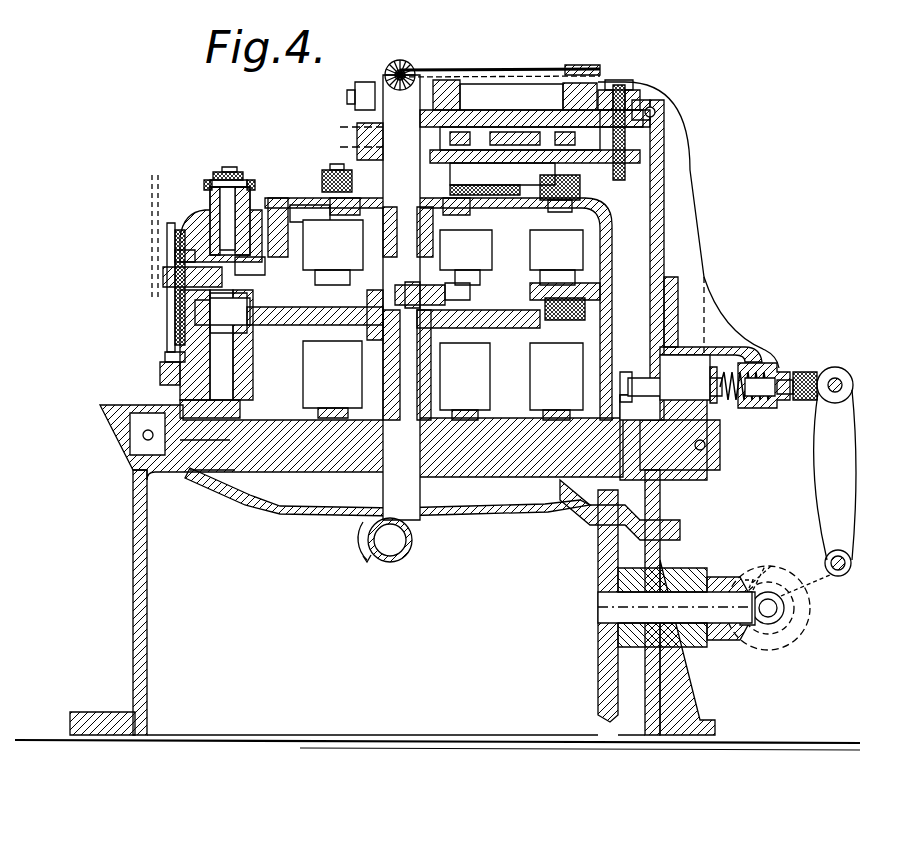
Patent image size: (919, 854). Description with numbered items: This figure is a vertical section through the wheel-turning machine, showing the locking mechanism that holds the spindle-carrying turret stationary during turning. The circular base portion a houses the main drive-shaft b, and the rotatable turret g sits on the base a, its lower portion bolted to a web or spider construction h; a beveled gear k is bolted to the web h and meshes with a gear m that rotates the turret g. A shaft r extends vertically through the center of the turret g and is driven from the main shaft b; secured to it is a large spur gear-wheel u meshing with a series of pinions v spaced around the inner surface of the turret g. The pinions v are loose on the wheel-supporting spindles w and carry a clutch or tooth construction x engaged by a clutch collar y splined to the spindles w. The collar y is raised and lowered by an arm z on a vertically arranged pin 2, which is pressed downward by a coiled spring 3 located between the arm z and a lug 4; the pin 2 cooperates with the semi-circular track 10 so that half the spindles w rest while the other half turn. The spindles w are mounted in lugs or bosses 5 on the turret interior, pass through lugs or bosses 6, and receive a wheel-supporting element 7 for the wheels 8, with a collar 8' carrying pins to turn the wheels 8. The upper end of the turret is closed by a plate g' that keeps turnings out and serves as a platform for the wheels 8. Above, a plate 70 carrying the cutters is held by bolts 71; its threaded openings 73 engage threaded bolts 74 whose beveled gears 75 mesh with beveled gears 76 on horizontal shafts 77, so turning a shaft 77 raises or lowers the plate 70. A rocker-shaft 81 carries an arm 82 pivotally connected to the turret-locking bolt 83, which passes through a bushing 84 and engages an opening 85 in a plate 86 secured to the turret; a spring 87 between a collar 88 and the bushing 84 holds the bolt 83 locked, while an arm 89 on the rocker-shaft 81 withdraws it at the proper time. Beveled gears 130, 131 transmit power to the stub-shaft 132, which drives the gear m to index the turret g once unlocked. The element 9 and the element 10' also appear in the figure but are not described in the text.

The circular base portion a is at (147, 600).
The main drive-shaft b is at (414, 545).
The rotatable turret g is at (494, 309).
The closing plate g' is at (429, 258).
The web or spider construction h is at (200, 468).
The beveled gear k is at (215, 498).
The gear m is at (595, 535).
The shaft r is at (410, 298).
The large spur gear-wheel u is at (265, 325).
The pinions v is at (250, 300).
The wheel-supporting spindles w is at (215, 315).
The clutch or tooth construction x is at (200, 300).
The clutch collar y is at (245, 272).
The arm z is at (172, 272).
The pin 2 is at (170, 340).
The coiled spring 3 is at (172, 258).
The lug 4 is at (167, 240).
The lugs or bosses 5 is at (303, 383).
The lugs or bosses 6 is at (530, 243).
The wheel-supporting element 7 is at (205, 195).
The wheels 8 is at (266, 272).
The collar 8' is at (189, 177).
The plate 9 is at (217, 228).
The semi-circular track 10 is at (148, 371).
The upper slide 10' is at (531, 103).
The plate 70 is at (530, 150).
The bolts 71 is at (350, 102).
The threaded openings 73 is at (648, 135).
The threaded bolts 74 is at (655, 110).
The beveled gears 75 is at (632, 105).
The beveled gears 76 is at (608, 80).
The horizontally arranged shafts 77 is at (538, 72).
The rocker-shaft 81 is at (852, 558).
The arm 82 is at (853, 460).
The turret-locking bolt 83 is at (790, 380).
The bushing 84 is at (765, 408).
The opening 85 is at (600, 385).
The plate 86 is at (626, 372).
The spring 87 is at (745, 370).
The collar 88 is at (715, 370).
The arm 89 is at (795, 600).
The beveled gear 130 is at (775, 565).
The beveled gear 131 is at (715, 578).
The stub-shaft 132 is at (605, 615).